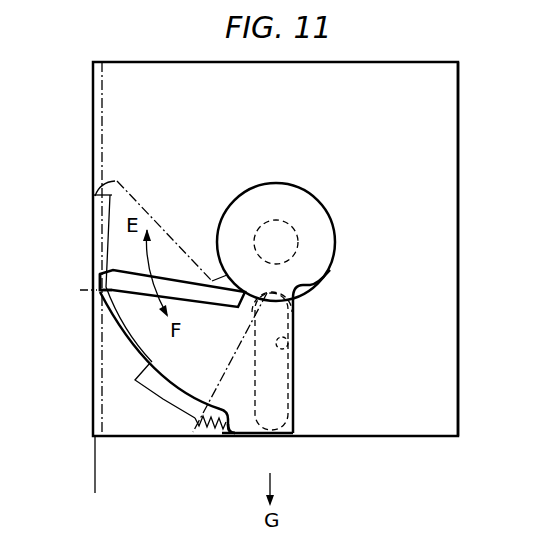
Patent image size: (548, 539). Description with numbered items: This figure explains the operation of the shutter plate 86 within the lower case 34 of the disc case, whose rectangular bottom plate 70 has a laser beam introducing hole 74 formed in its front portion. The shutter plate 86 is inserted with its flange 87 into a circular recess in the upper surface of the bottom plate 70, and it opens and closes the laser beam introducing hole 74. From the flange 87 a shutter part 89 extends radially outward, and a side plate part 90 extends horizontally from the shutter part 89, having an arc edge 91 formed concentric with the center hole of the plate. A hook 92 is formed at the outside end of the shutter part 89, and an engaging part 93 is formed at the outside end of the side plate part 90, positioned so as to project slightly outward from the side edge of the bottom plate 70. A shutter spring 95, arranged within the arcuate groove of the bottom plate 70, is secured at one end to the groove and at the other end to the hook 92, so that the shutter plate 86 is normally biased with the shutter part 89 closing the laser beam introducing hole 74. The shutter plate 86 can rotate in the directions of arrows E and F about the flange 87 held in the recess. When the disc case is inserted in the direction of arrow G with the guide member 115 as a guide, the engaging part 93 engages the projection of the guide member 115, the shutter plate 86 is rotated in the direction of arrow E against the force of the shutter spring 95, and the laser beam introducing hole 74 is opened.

The lower case 34 is at (452, 114).
The bottom plate 70 is at (440, 277).
The flange 87 is at (333, 228).
The side plate part 90 is at (185, 307).
The engaging part 93 is at (100, 280).
The guide member 115 is at (80, 290).
The laser beam introducing hole 74 is at (290, 338).
The shutter part 89 is at (296, 403).
The arc edge 91 is at (168, 387).
The shutter spring 95 is at (204, 413).
The hook 92 is at (232, 434).
The shutter plate 86 is at (246, 408).